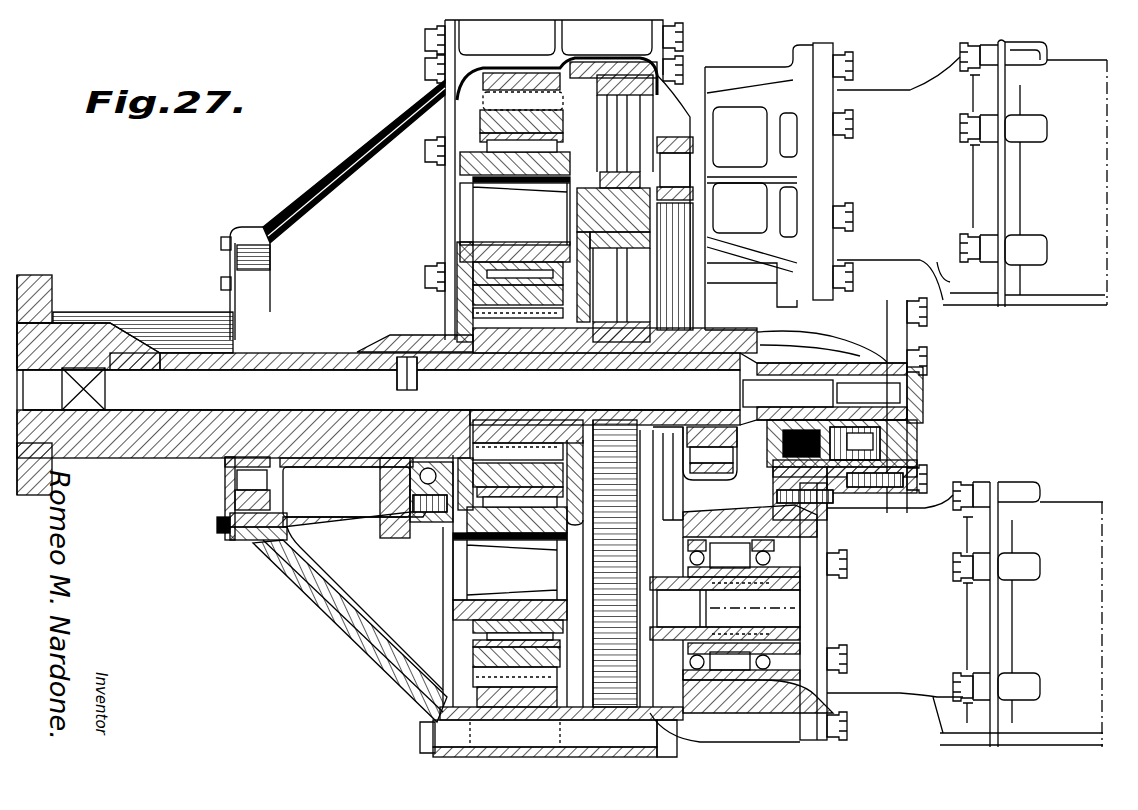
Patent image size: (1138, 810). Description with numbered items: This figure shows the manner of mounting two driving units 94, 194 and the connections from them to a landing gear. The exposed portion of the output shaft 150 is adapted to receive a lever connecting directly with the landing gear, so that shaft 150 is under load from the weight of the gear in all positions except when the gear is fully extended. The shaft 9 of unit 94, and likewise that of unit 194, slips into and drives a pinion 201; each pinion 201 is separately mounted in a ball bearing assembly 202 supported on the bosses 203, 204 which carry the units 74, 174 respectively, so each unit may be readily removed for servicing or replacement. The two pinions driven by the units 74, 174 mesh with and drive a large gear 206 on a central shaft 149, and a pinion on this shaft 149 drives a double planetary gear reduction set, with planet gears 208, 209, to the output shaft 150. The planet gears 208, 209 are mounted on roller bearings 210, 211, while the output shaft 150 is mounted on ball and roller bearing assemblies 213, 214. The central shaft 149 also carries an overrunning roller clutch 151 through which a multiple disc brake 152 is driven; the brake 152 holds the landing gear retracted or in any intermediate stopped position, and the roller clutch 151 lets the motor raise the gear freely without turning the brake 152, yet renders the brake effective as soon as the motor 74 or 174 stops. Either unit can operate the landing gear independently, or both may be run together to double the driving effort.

The driven shaft 9 is at (752, 620).
The unit 74 is at (1069, 625).
The driving unit 94 is at (915, 616).
The central shaft 149 is at (613, 417).
The output shaft 150 is at (112, 440).
The overrunning roller clutch 151 is at (703, 450).
The multiple disc brake 152 is at (810, 427).
The unit 174 is at (1084, 185).
The driving unit 194 is at (921, 180).
The pinion 201 is at (670, 638).
The ball bearing assembly 202 is at (742, 610).
The boss 203 is at (727, 690).
The boss 204 is at (764, 158).
The large gear 206 is at (683, 500).
The planet gear 208 is at (607, 112).
The planet gear 209 is at (500, 128).
The roller bearing 210 is at (587, 235).
The roller bearing 211 is at (520, 143).
The ball bearing assembly 213 is at (417, 475).
The roller bearing assembly 214 is at (280, 487).